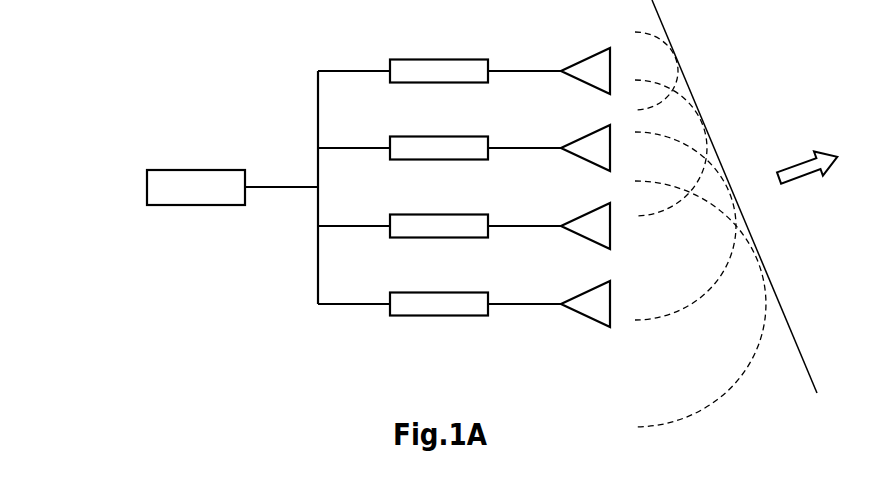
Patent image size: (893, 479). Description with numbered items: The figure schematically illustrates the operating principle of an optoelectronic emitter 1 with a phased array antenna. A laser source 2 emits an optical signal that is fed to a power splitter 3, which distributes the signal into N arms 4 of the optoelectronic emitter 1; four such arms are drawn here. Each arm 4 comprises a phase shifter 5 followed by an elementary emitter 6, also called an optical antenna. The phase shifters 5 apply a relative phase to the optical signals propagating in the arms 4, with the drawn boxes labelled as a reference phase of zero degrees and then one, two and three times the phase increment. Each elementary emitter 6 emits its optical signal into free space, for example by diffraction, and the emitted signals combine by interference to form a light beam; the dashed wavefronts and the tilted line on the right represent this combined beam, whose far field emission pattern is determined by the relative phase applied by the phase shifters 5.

The optoelectronic emitter 1 is at (104, 70).
The laser source 2 is at (197, 207).
The power splitter 3 is at (318, 311).
The arm 4 is at (356, 70).
The phase shifter 5 is at (475, 84).
The elementary emitter 6 is at (573, 77).